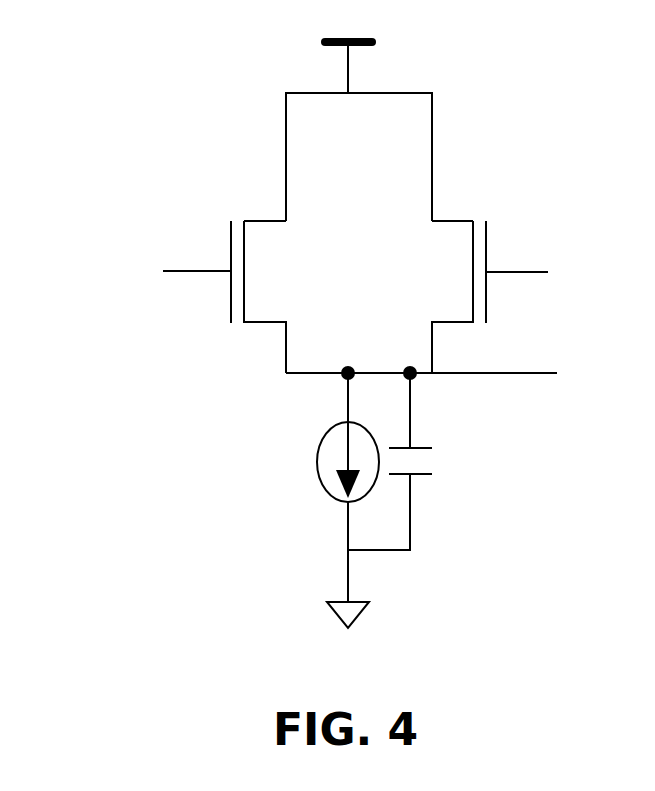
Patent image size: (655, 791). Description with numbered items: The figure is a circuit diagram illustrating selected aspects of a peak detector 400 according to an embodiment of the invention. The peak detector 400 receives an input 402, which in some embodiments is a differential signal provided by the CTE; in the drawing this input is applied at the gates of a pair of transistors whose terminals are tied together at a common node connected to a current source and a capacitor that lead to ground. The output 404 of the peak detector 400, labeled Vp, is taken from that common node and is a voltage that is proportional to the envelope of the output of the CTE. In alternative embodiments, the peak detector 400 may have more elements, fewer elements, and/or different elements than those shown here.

The peak detector 400 is at (335, 358).
The input 402 is at (131, 205).
The output 404 is at (575, 208).